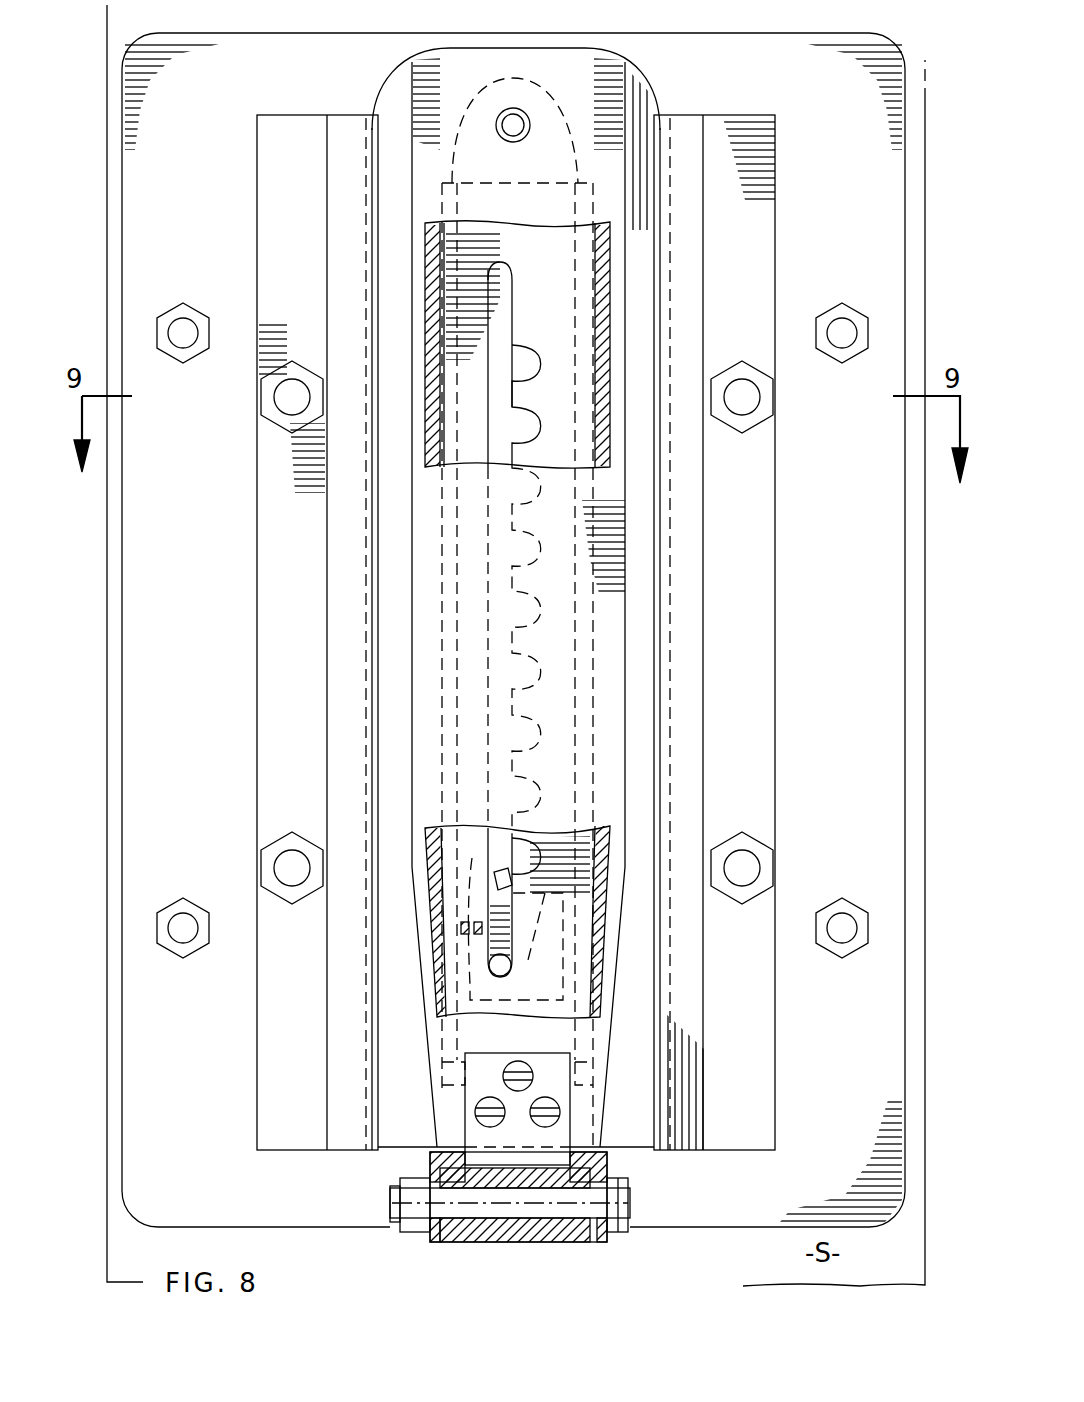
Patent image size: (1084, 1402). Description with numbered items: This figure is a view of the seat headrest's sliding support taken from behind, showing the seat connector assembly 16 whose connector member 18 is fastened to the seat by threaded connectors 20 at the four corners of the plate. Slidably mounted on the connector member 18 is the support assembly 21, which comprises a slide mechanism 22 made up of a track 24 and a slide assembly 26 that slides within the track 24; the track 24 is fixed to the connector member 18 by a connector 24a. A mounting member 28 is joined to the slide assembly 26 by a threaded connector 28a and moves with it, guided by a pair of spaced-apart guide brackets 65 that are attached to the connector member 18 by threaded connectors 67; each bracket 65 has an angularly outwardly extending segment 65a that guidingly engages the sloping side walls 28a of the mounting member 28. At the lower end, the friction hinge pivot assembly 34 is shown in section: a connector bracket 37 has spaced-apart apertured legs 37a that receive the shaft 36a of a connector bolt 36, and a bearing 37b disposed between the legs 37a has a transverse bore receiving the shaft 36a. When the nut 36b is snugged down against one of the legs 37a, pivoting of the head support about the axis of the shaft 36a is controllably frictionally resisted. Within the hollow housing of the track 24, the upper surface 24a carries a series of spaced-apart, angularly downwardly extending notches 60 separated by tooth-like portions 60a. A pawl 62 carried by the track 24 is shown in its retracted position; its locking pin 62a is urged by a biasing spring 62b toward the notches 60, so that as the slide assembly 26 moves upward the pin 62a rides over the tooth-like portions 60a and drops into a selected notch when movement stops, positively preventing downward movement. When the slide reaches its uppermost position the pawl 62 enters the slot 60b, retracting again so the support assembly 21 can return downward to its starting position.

The seat connector assembly 16 is at (887, 152).
The connector member 18 is at (513, 630).
The threaded connectors 20 is at (183, 318).
The support assembly 21 is at (380, 87).
The slide mechanism 22 is at (412, 68).
The track 24 is at (596, 279).
The connector / upper surface of track 24a is at (560, 245).
The slide assembly 26 is at (547, 92).
The mounting member 28 is at (666, 96).
The threaded connector / sloping side walls 28a is at (505, 128).
The friction hinge pivot assembly 34 is at (569, 1079).
The connector bolt 36 is at (595, 1205).
The shaft 36a is at (540, 1197).
The nut 36b is at (407, 1205).
The connector bracket 37 is at (563, 1120).
The apertured legs 37a is at (430, 1163).
The bearing 37b is at (457, 1225).
The notches 60 is at (533, 490).
The tooth-like portions 60a is at (522, 710).
The slot 60b is at (500, 270).
The pawl 62 is at (502, 845).
The locking pin 62a is at (500, 972).
The biasing spring 62b is at (460, 928).
The guide brackets 65 is at (765, 203).
The angularly outwardly extending segment 65a is at (347, 612).
The threaded connectors 67 is at (290, 397).